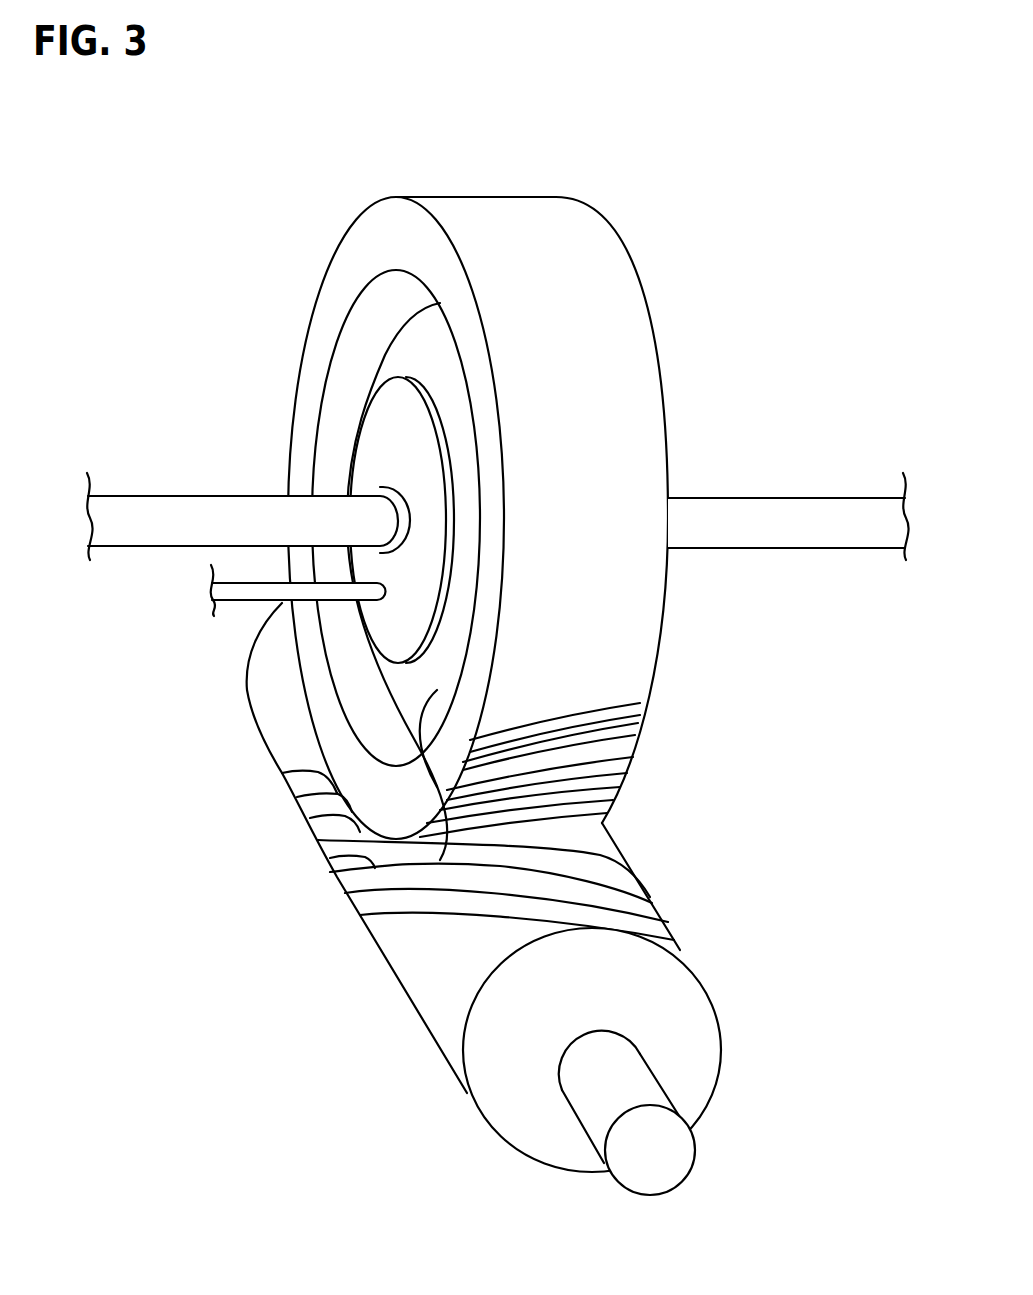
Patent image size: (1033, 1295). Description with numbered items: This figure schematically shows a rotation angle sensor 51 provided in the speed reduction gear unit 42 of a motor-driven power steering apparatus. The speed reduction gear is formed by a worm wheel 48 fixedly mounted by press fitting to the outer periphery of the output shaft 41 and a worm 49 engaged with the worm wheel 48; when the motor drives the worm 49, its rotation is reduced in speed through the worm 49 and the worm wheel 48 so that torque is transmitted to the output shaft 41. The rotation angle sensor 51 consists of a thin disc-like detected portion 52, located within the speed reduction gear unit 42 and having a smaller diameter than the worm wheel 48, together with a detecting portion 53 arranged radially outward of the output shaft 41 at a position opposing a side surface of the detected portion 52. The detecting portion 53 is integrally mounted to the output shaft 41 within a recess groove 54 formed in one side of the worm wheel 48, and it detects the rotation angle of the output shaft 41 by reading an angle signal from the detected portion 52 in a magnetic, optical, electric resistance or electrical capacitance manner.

The output shaft 41 is at (748, 522).
The speed reduction gear unit 42 is at (641, 277).
The worm wheel 48 is at (620, 740).
The worm 49 is at (638, 910).
The rotation angle sensor 51 is at (127, 652).
The detected portion 52 is at (392, 652).
The detecting portion 53 is at (403, 632).
The recess groove 54 is at (440, 860).